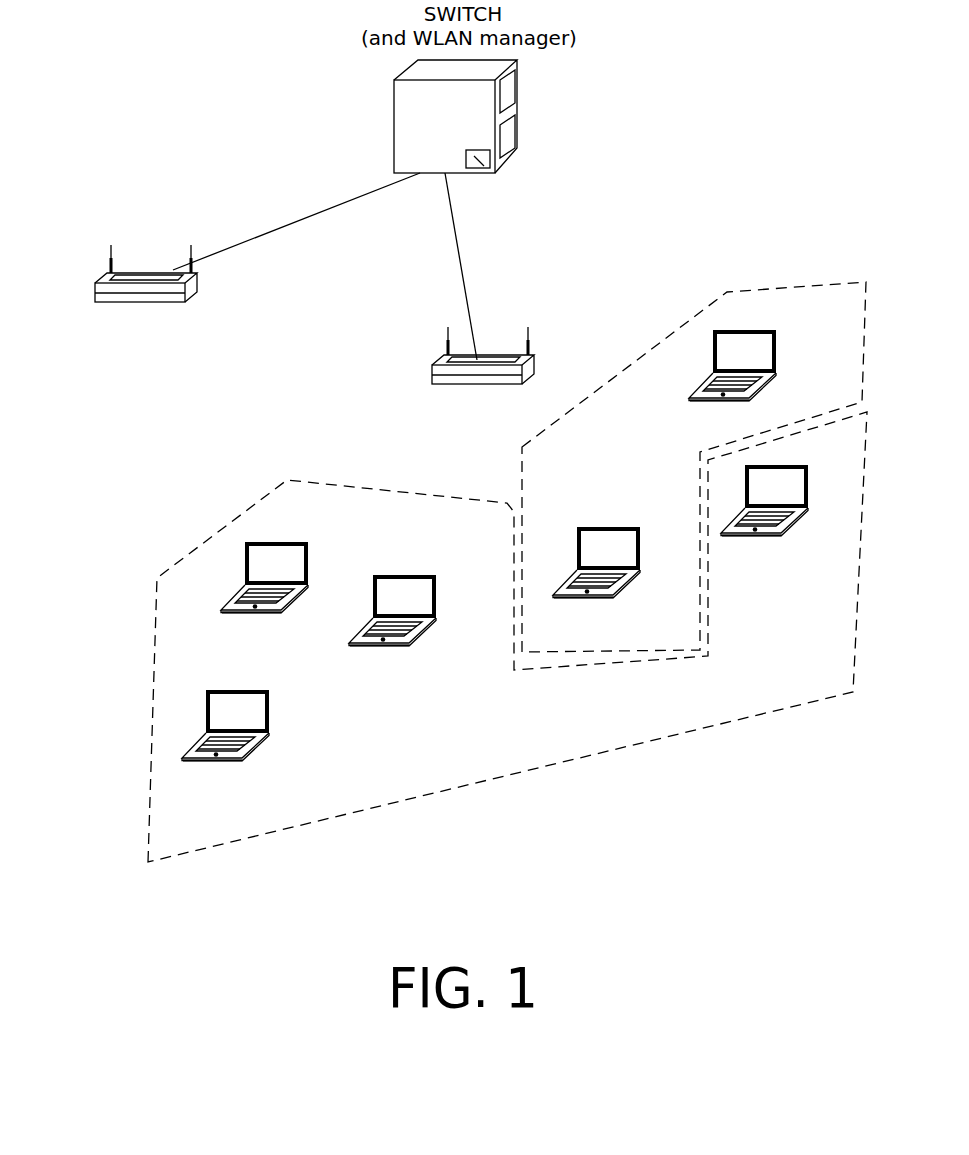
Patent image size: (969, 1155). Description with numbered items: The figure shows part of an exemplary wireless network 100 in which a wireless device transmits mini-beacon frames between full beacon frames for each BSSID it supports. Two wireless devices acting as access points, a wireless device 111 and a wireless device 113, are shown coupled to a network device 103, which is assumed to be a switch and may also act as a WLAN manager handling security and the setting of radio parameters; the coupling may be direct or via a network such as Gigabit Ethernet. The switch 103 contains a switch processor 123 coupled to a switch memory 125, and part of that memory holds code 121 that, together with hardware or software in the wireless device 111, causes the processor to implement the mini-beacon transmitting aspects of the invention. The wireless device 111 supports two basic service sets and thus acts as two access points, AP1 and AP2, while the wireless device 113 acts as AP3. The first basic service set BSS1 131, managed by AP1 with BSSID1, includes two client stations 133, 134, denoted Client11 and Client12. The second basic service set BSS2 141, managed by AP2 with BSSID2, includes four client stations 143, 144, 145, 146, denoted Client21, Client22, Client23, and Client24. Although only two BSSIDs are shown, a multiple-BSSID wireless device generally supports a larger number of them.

The wireless network 100 is at (146, 921).
The network device 103 is at (370, 208).
The wireless device 111 is at (475, 388).
The wireless device 113 is at (167, 303).
The code 121 is at (487, 165).
The switch processor 123 is at (507, 97).
The switch memory 125 is at (513, 127).
The basic service set BSS1 131 is at (632, 428).
The client station 133 is at (623, 527).
The client station 134 is at (763, 330).
The basic service set BSS2 141 is at (428, 773).
The client station 143 is at (795, 465).
The client station 144 is at (293, 542).
The client station 145 is at (417, 575).
The client station 146 is at (253, 690).